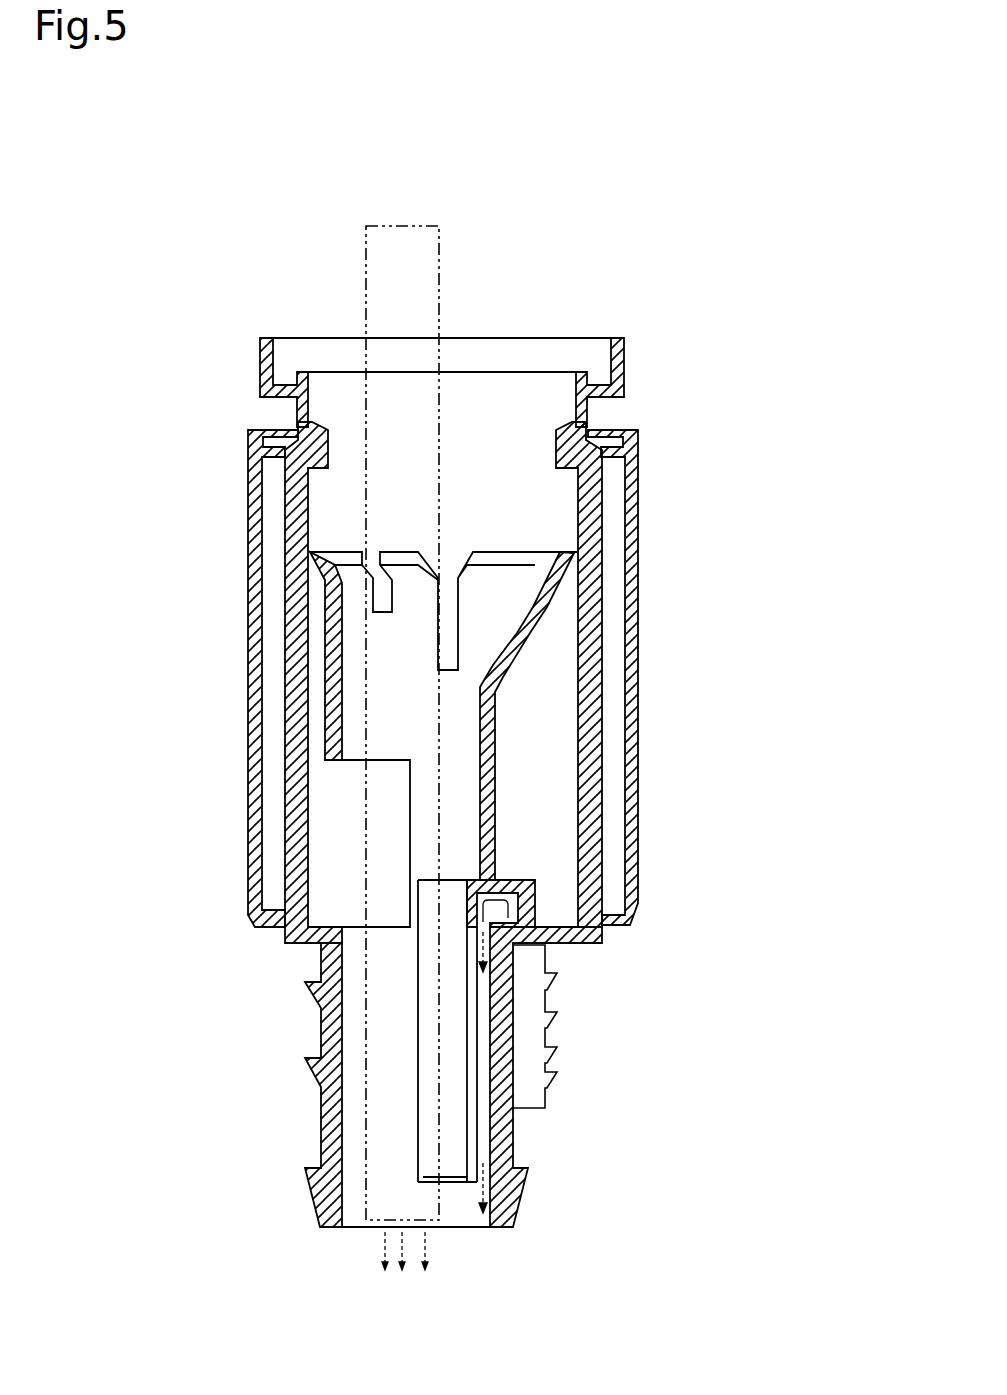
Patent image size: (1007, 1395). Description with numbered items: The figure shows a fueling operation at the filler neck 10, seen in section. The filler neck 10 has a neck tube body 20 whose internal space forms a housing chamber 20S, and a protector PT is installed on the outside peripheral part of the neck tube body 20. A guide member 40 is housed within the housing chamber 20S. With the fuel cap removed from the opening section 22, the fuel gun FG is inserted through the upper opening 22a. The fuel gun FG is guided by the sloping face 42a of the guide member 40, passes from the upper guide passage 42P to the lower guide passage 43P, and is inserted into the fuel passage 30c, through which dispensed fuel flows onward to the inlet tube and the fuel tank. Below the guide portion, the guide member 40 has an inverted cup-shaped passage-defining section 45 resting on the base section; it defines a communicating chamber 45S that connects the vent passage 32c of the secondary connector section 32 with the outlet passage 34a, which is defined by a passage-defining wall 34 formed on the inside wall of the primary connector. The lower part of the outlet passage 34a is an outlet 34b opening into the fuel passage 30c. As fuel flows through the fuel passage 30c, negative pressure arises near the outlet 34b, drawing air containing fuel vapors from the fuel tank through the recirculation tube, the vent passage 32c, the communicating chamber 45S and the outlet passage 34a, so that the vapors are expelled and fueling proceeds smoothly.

The filler neck 10 is at (685, 194).
The fuel gun FG is at (441, 252).
The opening section 22 is at (460, 355).
The upper opening 22a is at (530, 357).
The protector PT is at (639, 793).
The neck tube body 20 is at (510, 682).
The housing chamber 20S is at (510, 487).
The sloping face 42a is at (573, 552).
The upper guide passage 42P is at (350, 643).
The lower guide passage 43P is at (430, 812).
The guide member 40 is at (520, 663).
The passage-defining section 45 is at (594, 888).
The communicating chamber 45S is at (520, 905).
The secondary connector section 32 is at (602, 1077).
The vent passage 32c is at (557, 945).
The fuel passage 30c is at (353, 1112).
The passage-defining wall 34 is at (473, 1130).
The outlet passage 34a is at (486, 1113).
The outlet 34b is at (479, 1180).